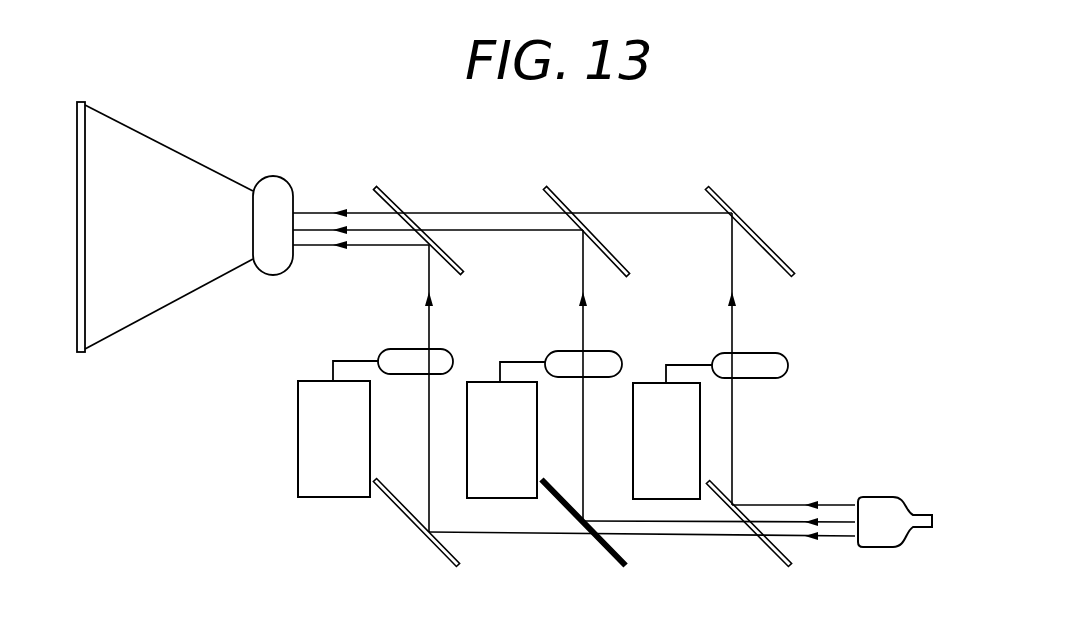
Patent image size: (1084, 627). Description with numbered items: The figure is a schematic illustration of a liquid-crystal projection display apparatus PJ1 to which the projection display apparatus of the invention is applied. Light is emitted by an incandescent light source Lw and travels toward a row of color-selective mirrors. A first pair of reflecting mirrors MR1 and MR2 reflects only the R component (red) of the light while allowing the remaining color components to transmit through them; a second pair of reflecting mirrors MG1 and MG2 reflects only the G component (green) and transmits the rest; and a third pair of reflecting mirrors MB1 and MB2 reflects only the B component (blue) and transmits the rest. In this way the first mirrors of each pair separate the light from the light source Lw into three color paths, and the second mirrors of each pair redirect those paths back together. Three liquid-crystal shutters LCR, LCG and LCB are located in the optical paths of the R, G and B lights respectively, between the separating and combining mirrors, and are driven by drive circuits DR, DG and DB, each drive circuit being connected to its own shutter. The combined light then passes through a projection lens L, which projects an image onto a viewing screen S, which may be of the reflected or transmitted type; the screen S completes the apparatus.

The viewing screen S is at (86, 103).
The projection lens L is at (272, 176).
The liquid-crystal projection display apparatus PJ1 is at (648, 176).
The reflecting mirror MB2 is at (380, 190).
The reflecting mirror MG2 is at (551, 196).
The reflecting mirror MR2 is at (727, 202).
The liquid-crystal shutter LCB is at (440, 349).
The liquid-crystal shutter LCG is at (605, 351).
The liquid-crystal shutter LCR is at (784, 354).
The drive circuit DB is at (310, 381).
The drive circuit DG is at (478, 382).
The drive circuit DR is at (643, 383).
The red light component R is at (758, 505).
The green light component G is at (782, 522).
The blue light component B is at (833, 535).
The incandescent light source Lw is at (873, 497).
The reflecting mirror MB1 is at (448, 554).
The reflecting mirror MG1 is at (616, 564).
The reflecting mirror MR1 is at (784, 568).